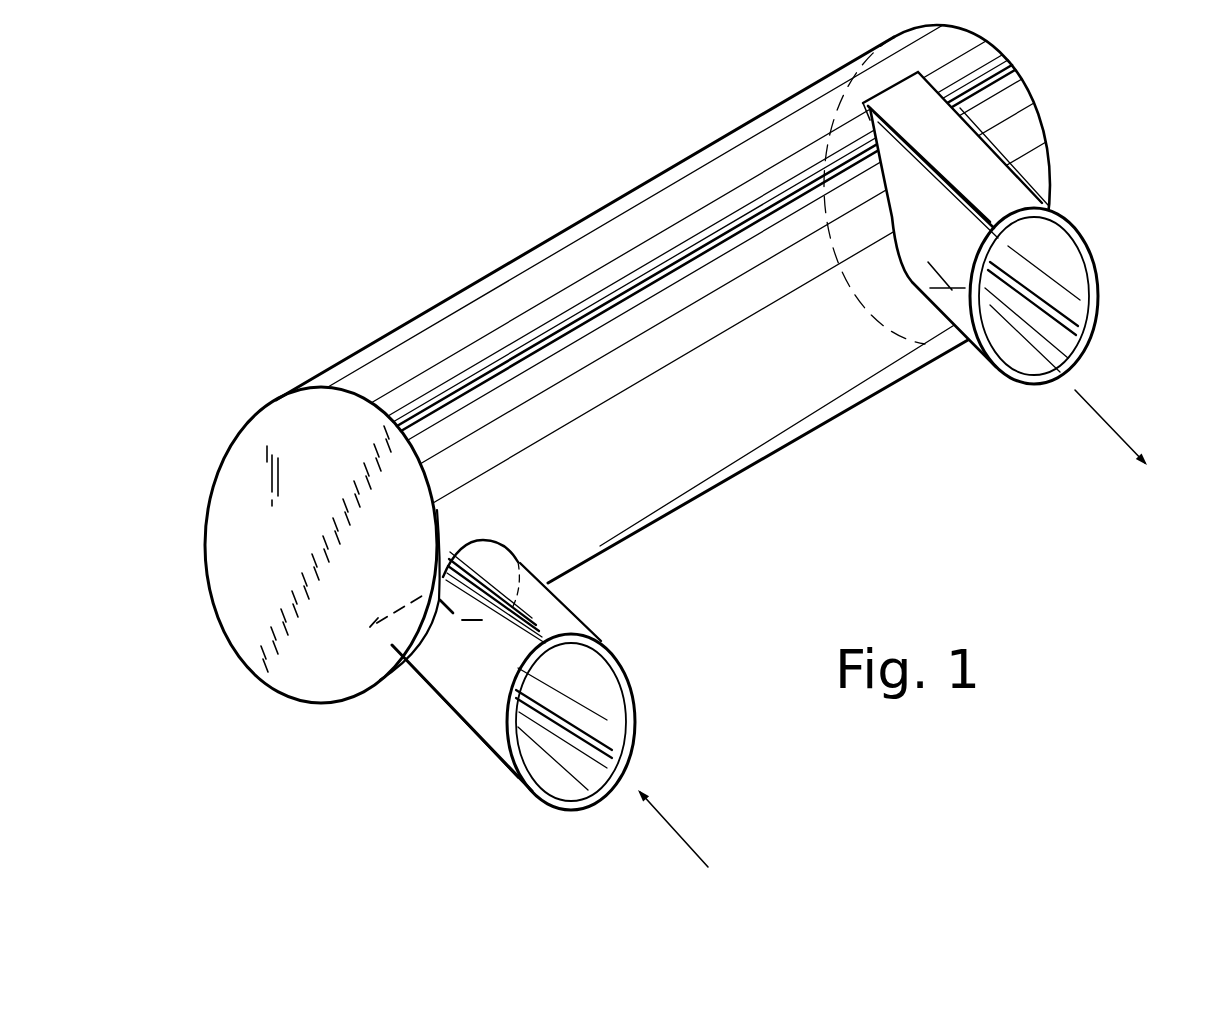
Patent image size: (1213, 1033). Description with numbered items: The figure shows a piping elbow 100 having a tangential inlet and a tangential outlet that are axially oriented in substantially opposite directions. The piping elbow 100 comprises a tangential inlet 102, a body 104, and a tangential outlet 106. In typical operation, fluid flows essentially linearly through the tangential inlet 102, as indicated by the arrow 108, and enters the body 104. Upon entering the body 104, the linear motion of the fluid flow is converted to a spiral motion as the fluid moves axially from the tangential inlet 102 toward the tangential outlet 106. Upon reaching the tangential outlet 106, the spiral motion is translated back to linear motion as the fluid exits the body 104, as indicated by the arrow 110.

The piping elbow 100 is at (676, 446).
The tangential inlet 102 is at (468, 682).
The body 104 is at (383, 335).
The tangential outlet 106 is at (997, 192).
The arrow 108 is at (689, 845).
The arrow 110 is at (1097, 414).